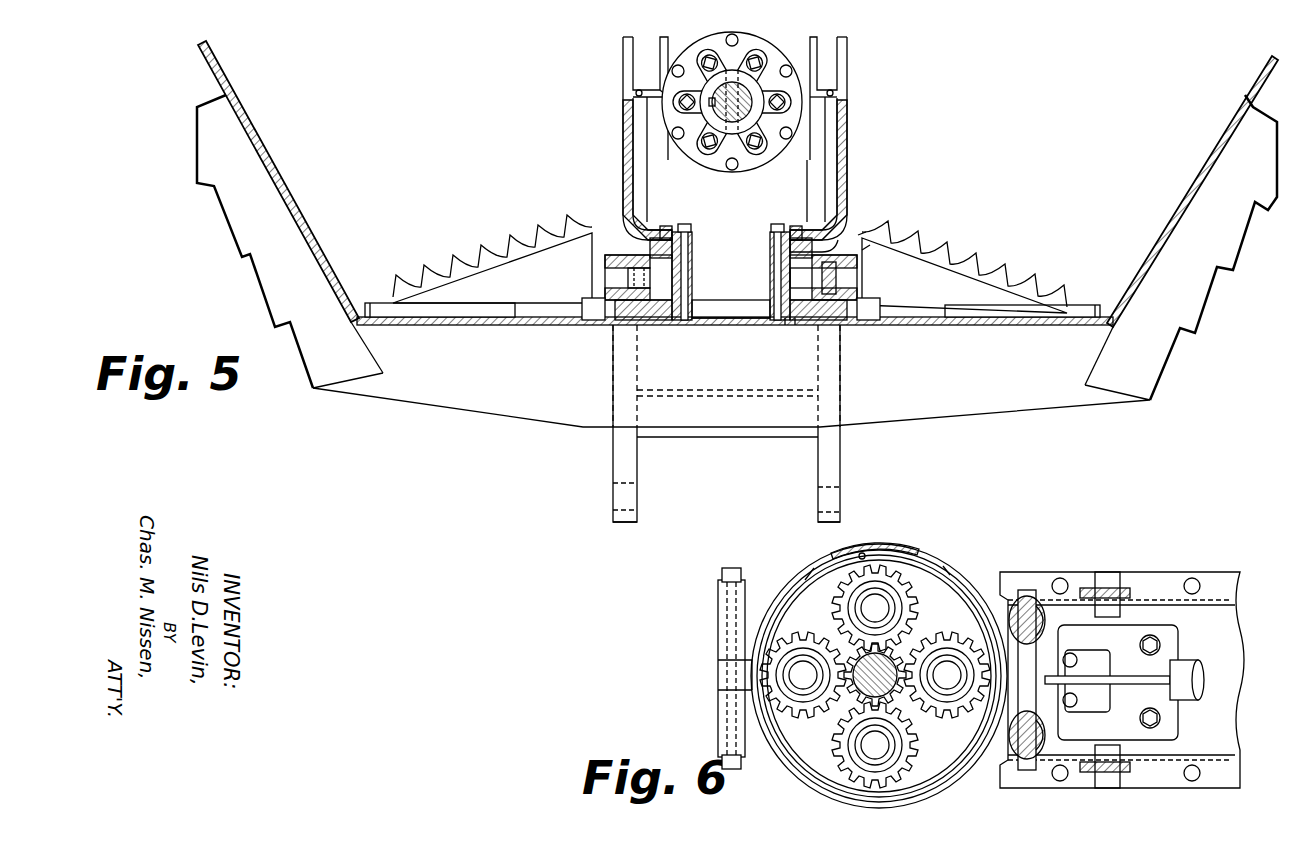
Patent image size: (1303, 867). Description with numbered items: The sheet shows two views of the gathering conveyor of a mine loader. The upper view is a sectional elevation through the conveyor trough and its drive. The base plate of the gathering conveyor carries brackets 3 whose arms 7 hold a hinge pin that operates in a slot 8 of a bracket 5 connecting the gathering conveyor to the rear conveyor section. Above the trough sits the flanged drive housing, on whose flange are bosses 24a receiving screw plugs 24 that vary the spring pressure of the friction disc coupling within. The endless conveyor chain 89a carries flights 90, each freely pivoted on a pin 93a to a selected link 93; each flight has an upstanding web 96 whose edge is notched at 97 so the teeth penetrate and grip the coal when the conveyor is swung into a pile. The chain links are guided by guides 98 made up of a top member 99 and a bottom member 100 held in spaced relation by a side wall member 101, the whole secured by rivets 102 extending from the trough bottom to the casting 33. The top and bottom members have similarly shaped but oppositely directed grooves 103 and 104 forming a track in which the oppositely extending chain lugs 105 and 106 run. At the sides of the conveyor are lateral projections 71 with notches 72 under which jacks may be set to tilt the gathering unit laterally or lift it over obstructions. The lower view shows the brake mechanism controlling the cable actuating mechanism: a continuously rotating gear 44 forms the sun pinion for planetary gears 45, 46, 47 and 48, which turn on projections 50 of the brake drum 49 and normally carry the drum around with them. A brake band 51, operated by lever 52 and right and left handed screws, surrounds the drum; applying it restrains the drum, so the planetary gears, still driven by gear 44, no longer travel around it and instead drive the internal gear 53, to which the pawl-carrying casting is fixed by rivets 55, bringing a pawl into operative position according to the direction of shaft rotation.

In FIG. 5, the brackets 3 is at (613, 368).
In FIG. 5, the bracket 5 is at (628, 522).
In FIG. 5, the arms 7 is at (627, 460).
In FIG. 5, the slot 8 is at (624, 484).
In FIG. 5, the screw plugs 24 is at (758, 60).
In FIG. 5, the bosses 24a is at (750, 52).
In FIG. 5, the casting 33 is at (640, 160).
In FIG. 6, the gear 44 is at (892, 658).
In FIG. 6, the planetary gear 45 is at (893, 562).
In FIG. 6, the planetary gear 46 is at (948, 718).
In FIG. 6, the planetary gear 47 is at (843, 757).
In FIG. 6, the planetary gear 48 is at (795, 710).
In FIG. 6, the brake drum 49 is at (855, 556).
In FIG. 6, the projections 50 is at (800, 675).
In FIG. 6, the brake band 51 is at (890, 545).
In FIG. 6, the lever 52 is at (1140, 682).
In FIG. 6, the internal gear 53 is at (845, 566).
In FIG. 6, the rivets 55 is at (864, 553).
In FIG. 5, the lateral projection 71 is at (243, 222).
In FIG. 5, the notches 72 is at (246, 262).
In FIG. 5, the endless conveyor chain 89a is at (640, 278).
In FIG. 5, the flights 90 is at (495, 272).
In FIG. 5, the link 93 is at (870, 250).
In FIG. 5, the pin 93a is at (858, 235).
In FIG. 5, the upstanding web 96 is at (530, 238).
In FIG. 5, the notches 97 is at (462, 258).
In FIG. 5, the guides 98 is at (650, 236).
In FIG. 5, the top guide member 99 is at (666, 228).
In FIG. 5, the bottom guide member 100 is at (648, 322).
In FIG. 5, the side wall member 101 is at (690, 292).
In FIG. 5, the rivets 102 is at (686, 248).
In FIG. 5, the groove 103 is at (808, 165).
In FIG. 5, the groove 104 is at (786, 326).
In FIG. 5, the lug 105 is at (828, 228).
In FIG. 5, the lug 106 is at (795, 325).